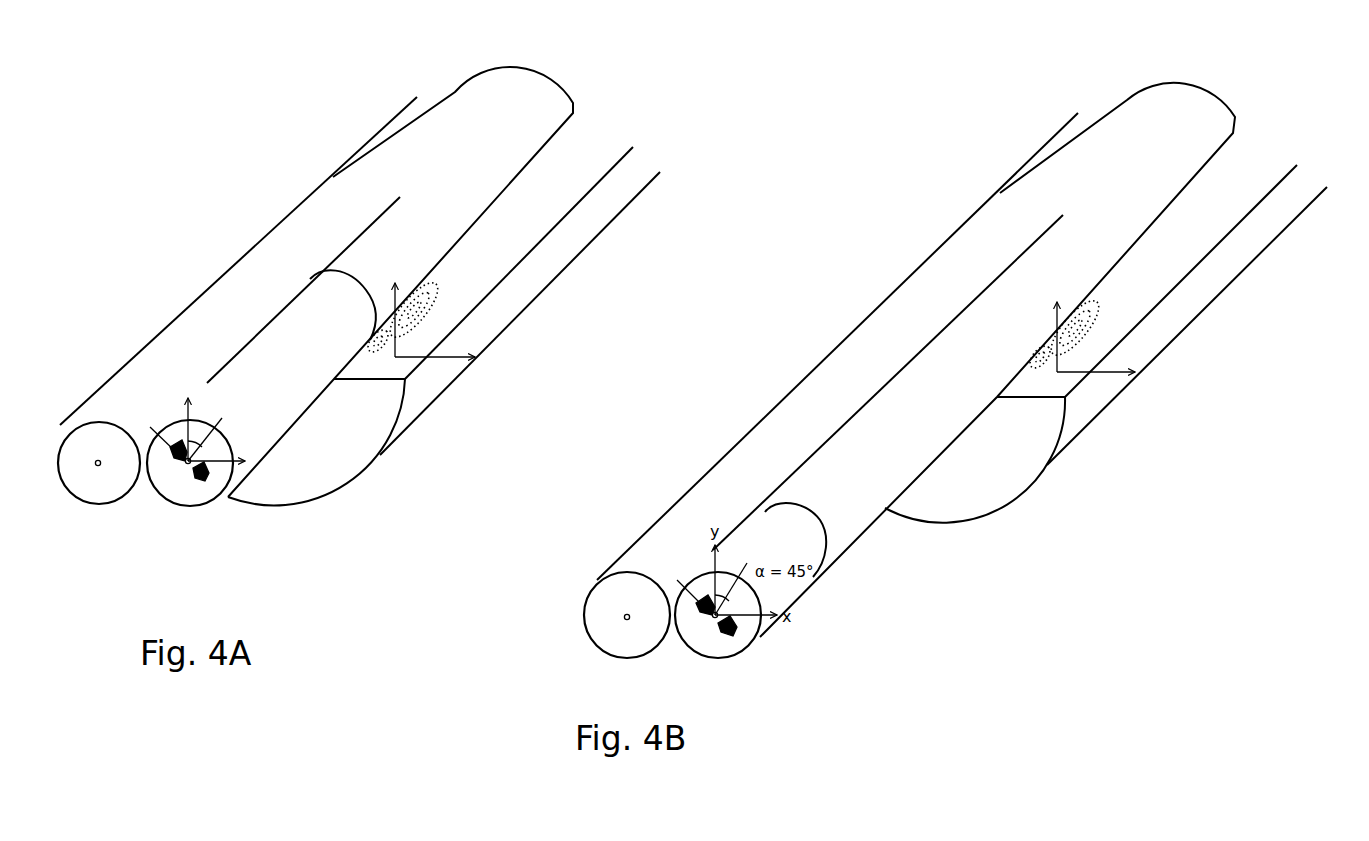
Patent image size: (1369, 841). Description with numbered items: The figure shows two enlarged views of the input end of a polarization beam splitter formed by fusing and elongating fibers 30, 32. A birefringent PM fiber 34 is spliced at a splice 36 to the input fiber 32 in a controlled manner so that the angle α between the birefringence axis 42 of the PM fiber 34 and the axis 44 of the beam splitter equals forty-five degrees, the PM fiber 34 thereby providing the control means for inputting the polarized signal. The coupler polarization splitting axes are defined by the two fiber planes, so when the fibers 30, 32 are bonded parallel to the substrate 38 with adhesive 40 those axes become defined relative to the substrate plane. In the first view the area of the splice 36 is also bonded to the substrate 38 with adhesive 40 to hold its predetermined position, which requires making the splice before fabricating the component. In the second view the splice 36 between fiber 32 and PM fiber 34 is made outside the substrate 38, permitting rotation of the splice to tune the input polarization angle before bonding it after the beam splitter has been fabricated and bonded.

In FIG. 4A, the fiber 30 is at (183, 333).
In FIG. 4B, the fiber 30 is at (712, 490).
In FIG. 4A, the input fiber 32 is at (427, 252).
In FIG. 4B, the input fiber 32 is at (920, 426).
In FIG. 4A, the birefringent PM fiber 34 is at (303, 378).
In FIG. 4B, the birefringent PM fiber 34 is at (790, 590).
In FIG. 4A, the splice 36 is at (345, 273).
In FIG. 4B, the splice 36 is at (812, 513).
In FIG. 4A, the substrate 38 is at (577, 177).
In FIG. 4B, the substrate 38 is at (1240, 190).
In FIG. 4A, the adhesive 40 is at (423, 313).
In FIG. 4B, the adhesive 40 is at (1083, 343).
In FIG. 4A, the birefringence axis 42 is at (218, 462).
In FIG. 4A, the axis of the beam splitter 44 is at (220, 417).